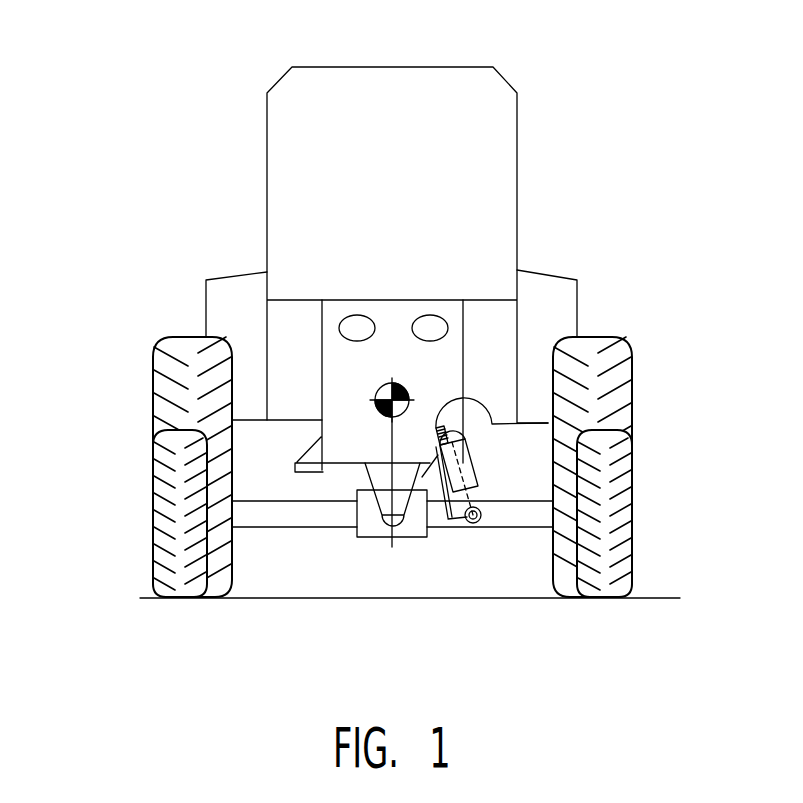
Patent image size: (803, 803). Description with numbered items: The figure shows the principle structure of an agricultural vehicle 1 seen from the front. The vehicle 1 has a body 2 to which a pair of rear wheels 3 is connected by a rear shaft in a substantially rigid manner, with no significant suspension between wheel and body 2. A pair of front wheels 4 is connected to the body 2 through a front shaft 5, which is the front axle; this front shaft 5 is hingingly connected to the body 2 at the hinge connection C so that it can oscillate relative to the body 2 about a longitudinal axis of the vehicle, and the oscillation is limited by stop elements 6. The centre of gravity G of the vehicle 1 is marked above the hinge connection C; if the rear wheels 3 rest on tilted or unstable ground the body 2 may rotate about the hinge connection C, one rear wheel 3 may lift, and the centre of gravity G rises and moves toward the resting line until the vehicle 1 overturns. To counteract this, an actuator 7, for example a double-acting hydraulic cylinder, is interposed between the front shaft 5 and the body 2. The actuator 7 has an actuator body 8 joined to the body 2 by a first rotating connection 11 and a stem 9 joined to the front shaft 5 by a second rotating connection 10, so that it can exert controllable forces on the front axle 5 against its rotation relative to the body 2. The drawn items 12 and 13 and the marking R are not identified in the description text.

The vehicle 1 is at (133, 174).
The body 2 is at (487, 232).
The rear wheels 3 is at (165, 393).
The front wheels 4 is at (168, 482).
The front shaft 5 is at (260, 513).
The stop elements 6 is at (303, 470).
The actuator 7 is at (550, 486).
The actuator body 8 is at (470, 470).
The stem 9 is at (470, 502).
The second rotating connection 10 is at (473, 523).
The first rotating connection 11 is at (459, 438).
The axle housing 12 is at (410, 528).
The sensor housing 13 is at (490, 428).
The centre of gravity G is at (391, 398).
The roll axis R is at (388, 435).
The hinge connection C is at (388, 527).